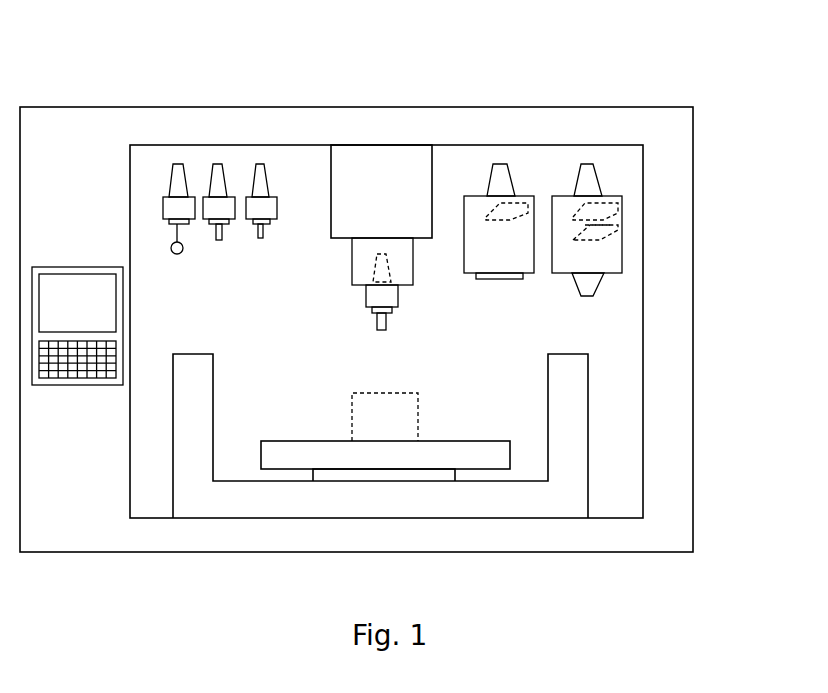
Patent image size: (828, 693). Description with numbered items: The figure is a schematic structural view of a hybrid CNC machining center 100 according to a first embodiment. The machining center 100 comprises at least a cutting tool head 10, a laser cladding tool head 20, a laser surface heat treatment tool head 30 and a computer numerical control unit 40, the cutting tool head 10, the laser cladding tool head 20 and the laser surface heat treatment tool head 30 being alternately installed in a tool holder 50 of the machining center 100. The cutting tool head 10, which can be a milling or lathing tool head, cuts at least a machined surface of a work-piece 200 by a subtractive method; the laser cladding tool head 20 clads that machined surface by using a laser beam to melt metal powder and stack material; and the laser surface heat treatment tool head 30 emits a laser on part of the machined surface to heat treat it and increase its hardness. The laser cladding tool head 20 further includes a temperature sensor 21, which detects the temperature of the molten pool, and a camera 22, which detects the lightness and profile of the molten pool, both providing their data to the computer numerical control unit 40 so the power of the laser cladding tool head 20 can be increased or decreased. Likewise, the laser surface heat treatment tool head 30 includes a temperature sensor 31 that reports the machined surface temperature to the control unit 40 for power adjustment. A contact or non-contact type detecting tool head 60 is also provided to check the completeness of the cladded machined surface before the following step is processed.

The hybrid CNC machining center 100 is at (736, 26).
The contact or non-contact type detecting tool head 60 is at (177, 164).
The cutting tool head 10 is at (260, 164).
The tool holder 50 is at (352, 255).
The laser surface heat treatment tool head 30 is at (500, 164).
The temperature sensor 31 is at (537, 195).
The laser cladding tool head 20 is at (587, 164).
The camera 22 is at (618, 204).
The temperature sensor 21 is at (618, 226).
The computer numerical control unit 40 is at (89, 314).
The work-piece 200 is at (418, 405).